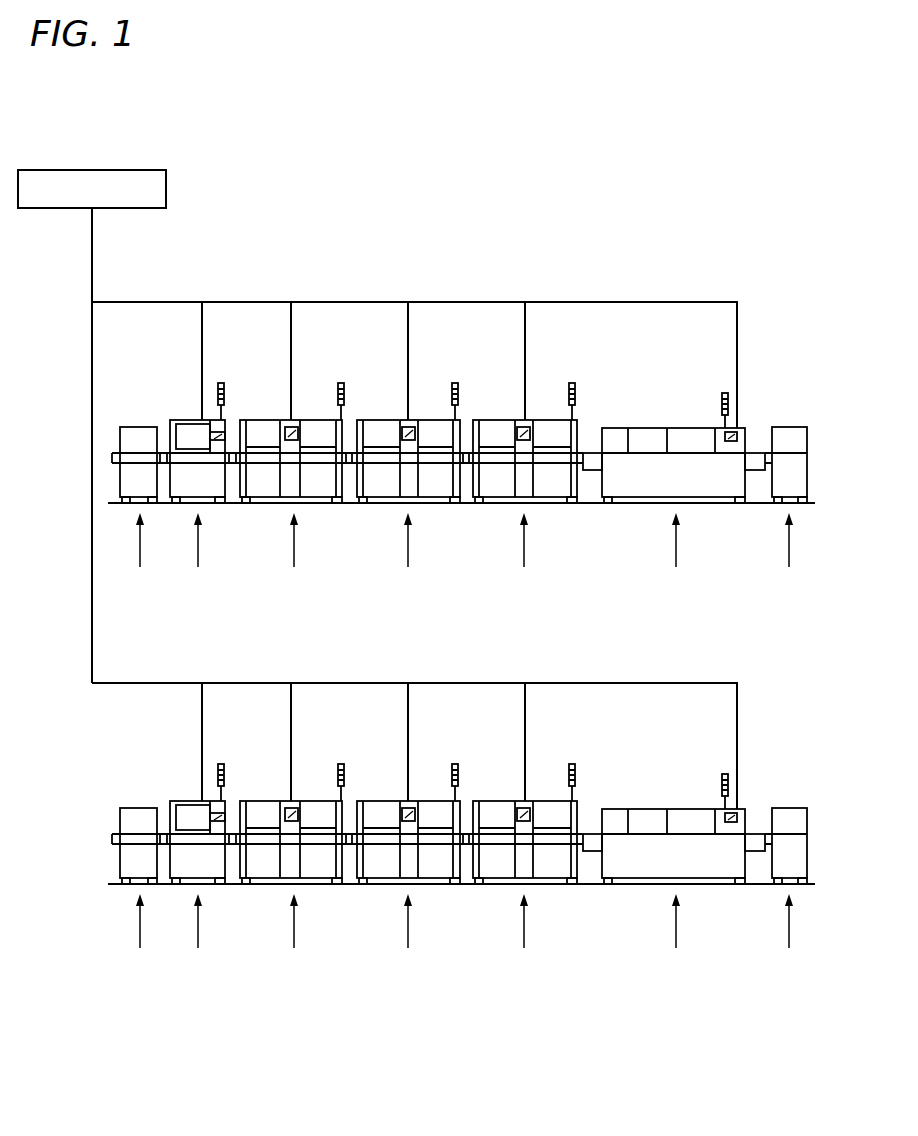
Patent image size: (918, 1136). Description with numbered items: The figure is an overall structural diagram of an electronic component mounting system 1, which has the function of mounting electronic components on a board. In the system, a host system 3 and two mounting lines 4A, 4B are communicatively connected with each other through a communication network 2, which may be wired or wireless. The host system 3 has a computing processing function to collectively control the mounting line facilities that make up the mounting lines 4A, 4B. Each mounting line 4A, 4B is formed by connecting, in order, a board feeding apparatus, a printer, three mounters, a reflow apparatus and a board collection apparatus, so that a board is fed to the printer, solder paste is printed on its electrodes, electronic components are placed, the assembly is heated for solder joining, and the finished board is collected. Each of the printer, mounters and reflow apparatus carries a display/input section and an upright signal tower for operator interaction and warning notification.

The electronic component mounting system 1 is at (393, 108).
The communication network 2 is at (660, 302).
The host system 3 is at (166, 190).
The mounting line 4A is at (764, 294).
The mounting line 4B is at (764, 674).